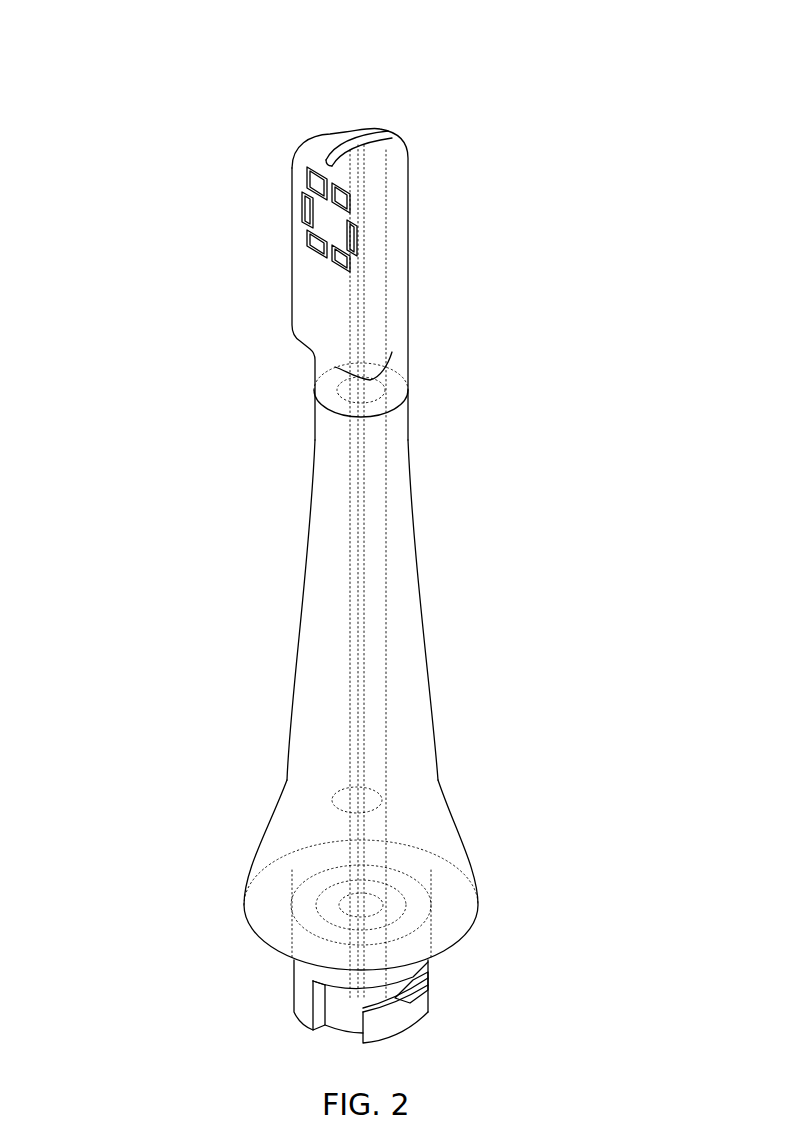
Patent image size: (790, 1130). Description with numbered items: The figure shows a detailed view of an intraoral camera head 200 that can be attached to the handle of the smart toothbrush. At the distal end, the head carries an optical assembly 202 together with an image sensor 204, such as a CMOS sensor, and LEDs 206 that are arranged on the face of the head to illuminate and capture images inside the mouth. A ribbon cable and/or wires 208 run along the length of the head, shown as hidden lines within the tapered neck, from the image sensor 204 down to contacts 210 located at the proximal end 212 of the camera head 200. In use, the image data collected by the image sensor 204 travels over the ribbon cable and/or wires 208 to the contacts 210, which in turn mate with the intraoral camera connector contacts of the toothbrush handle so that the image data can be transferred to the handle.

The intraoral camera head 200 is at (235, 130).
The optical assembly 202 is at (307, 217).
The image sensor 204 is at (367, 221).
The LEDs 206 is at (303, 255).
The ribbon cable and/or wires 208 is at (368, 621).
The contacts 210 is at (433, 962).
The proximal end 212 is at (272, 968).